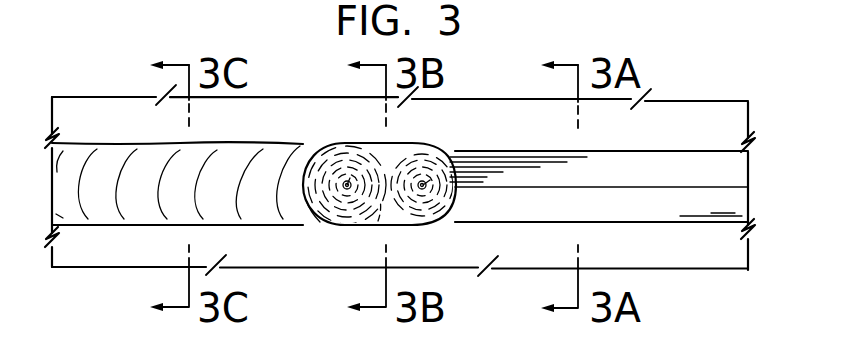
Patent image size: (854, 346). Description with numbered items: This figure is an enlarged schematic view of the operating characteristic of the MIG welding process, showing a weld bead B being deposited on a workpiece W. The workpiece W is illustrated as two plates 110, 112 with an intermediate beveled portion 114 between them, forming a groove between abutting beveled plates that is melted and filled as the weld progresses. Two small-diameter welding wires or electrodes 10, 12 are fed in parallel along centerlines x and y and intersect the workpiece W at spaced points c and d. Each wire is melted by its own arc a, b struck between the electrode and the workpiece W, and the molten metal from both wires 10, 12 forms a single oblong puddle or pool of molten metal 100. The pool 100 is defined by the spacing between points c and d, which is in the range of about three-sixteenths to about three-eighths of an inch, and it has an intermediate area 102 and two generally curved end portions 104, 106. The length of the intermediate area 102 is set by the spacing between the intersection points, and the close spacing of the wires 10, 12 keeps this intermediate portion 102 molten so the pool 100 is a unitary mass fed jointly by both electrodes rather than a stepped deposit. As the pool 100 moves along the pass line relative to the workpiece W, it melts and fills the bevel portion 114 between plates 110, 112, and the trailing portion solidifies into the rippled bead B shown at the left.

The workpiece W is at (716, 264).
The weld bead B is at (107, 143).
The plate 110 is at (684, 126).
The plate 112 is at (720, 235).
The intermediate beveled portion 114 is at (716, 187).
The pool of molten metal 100 is at (440, 224).
The welding wire 10 is at (343, 181).
The welding wire 12 is at (428, 183).
The arc a is at (346, 181).
The arc b is at (426, 181).
The curved end portion 106 is at (456, 198).
The curved end portion 104 is at (310, 203).
The intermediate area 102 is at (378, 221).